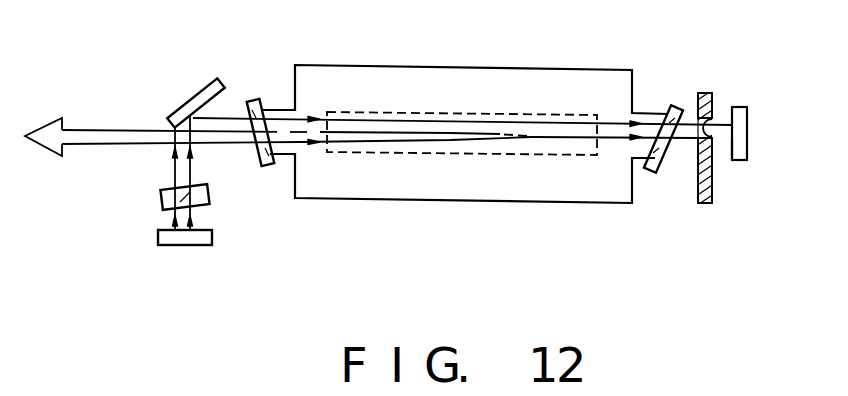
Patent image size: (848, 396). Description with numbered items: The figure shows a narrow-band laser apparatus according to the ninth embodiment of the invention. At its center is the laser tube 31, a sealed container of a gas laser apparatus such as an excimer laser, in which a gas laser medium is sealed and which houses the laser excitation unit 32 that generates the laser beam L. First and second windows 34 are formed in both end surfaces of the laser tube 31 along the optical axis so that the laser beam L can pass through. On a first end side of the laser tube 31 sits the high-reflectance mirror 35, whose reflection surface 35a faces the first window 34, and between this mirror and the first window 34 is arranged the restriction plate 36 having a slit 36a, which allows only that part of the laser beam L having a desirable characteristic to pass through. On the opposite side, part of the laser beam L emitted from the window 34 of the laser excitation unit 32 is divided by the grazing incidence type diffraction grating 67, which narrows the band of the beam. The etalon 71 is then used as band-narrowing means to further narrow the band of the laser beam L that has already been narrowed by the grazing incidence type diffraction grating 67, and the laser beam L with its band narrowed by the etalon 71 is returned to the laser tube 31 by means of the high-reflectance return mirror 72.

The laser tube 31 is at (342, 65).
The laser excitation unit 32 is at (480, 112).
The window 34 is at (258, 100).
The high-reflectance mirror 35 is at (747, 134).
The reflection surface 35a is at (739, 160).
The restriction plate 36 is at (713, 200).
The slit 36a is at (720, 115).
The grazing incidence type diffraction grating 67 is at (190, 98).
The etalon 71 is at (162, 203).
The high-reflectance return mirror 72 is at (190, 248).
The laser beam L is at (108, 142).